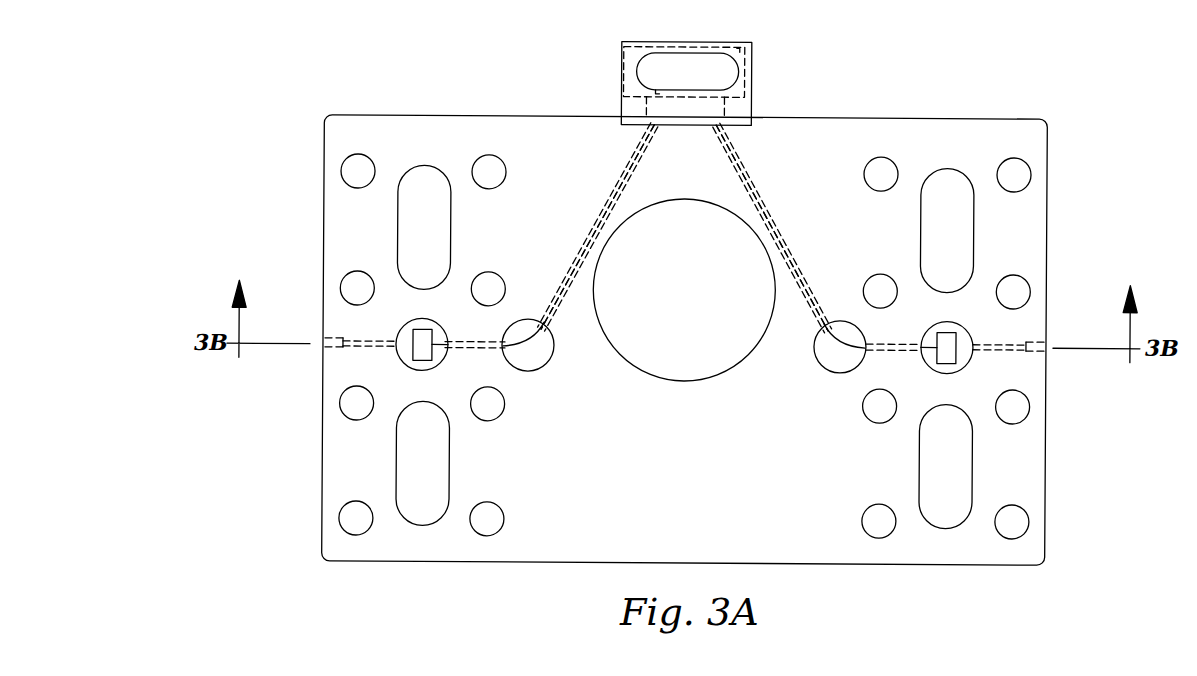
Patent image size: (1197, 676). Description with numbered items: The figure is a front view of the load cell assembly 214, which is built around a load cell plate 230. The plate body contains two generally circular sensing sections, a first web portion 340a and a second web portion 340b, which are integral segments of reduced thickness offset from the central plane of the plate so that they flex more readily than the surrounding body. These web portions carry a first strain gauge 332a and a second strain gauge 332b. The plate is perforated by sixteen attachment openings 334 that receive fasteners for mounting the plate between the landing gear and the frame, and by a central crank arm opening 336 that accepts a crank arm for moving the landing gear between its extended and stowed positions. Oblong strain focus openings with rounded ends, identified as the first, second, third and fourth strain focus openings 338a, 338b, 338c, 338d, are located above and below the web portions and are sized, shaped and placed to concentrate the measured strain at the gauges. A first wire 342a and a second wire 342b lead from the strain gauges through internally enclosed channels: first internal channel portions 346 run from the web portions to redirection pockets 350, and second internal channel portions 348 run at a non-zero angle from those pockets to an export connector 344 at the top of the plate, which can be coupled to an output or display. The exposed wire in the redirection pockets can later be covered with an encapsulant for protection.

The load cell assembly 214 is at (430, 584).
The load cell plate 230 is at (607, 541).
The first strain gauge 332a is at (415, 358).
The second strain gauge 332b is at (958, 357).
The attachment openings 334 is at (353, 158).
The crank arm opening 336 is at (702, 370).
The first strain focus opening 338a is at (430, 168).
The second strain focus opening 338b is at (397, 490).
The third strain focus opening 338c is at (975, 217).
The fourth strain focus opening 338d is at (972, 460).
The first web portion 340a is at (410, 332).
The second web portion 340b is at (962, 342).
The first wire 342a is at (578, 260).
The second wire 342b is at (748, 163).
The export connector 344 is at (641, 42).
The first internal channel portions 346 is at (462, 352).
The second internal channel portions 348 is at (622, 178).
The redirection pockets 350 is at (528, 372).